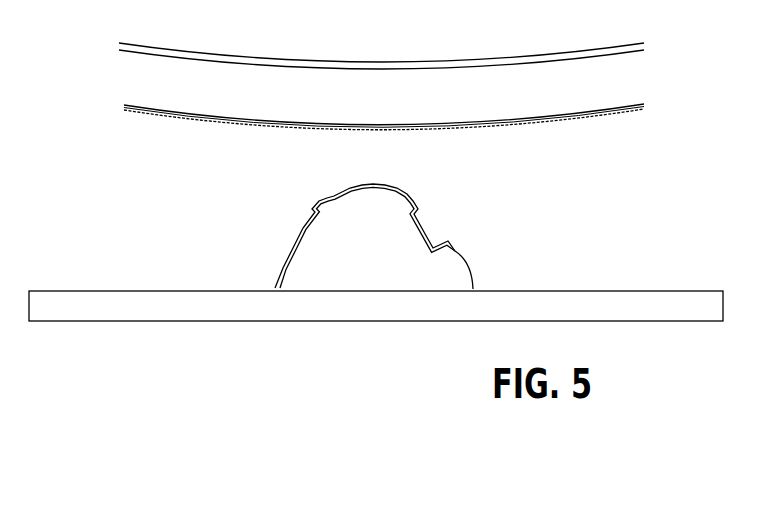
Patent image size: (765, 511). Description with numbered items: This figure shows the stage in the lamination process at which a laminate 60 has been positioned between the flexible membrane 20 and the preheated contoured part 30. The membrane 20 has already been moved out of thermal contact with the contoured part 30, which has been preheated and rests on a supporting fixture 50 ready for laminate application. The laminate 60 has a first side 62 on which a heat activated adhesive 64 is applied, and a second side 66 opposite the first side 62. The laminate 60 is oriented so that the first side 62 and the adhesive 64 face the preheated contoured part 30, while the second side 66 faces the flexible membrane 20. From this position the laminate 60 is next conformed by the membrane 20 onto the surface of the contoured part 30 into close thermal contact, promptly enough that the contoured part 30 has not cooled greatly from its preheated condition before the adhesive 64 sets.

The flexible membrane 20 is at (292, 62).
The contoured part 30 is at (290, 253).
The supporting fixture 50 is at (384, 270).
The laminate 60 is at (339, 110).
The first side 62 is at (127, 112).
The heat activated adhesive 64 is at (175, 117).
The second side 66 is at (127, 101).